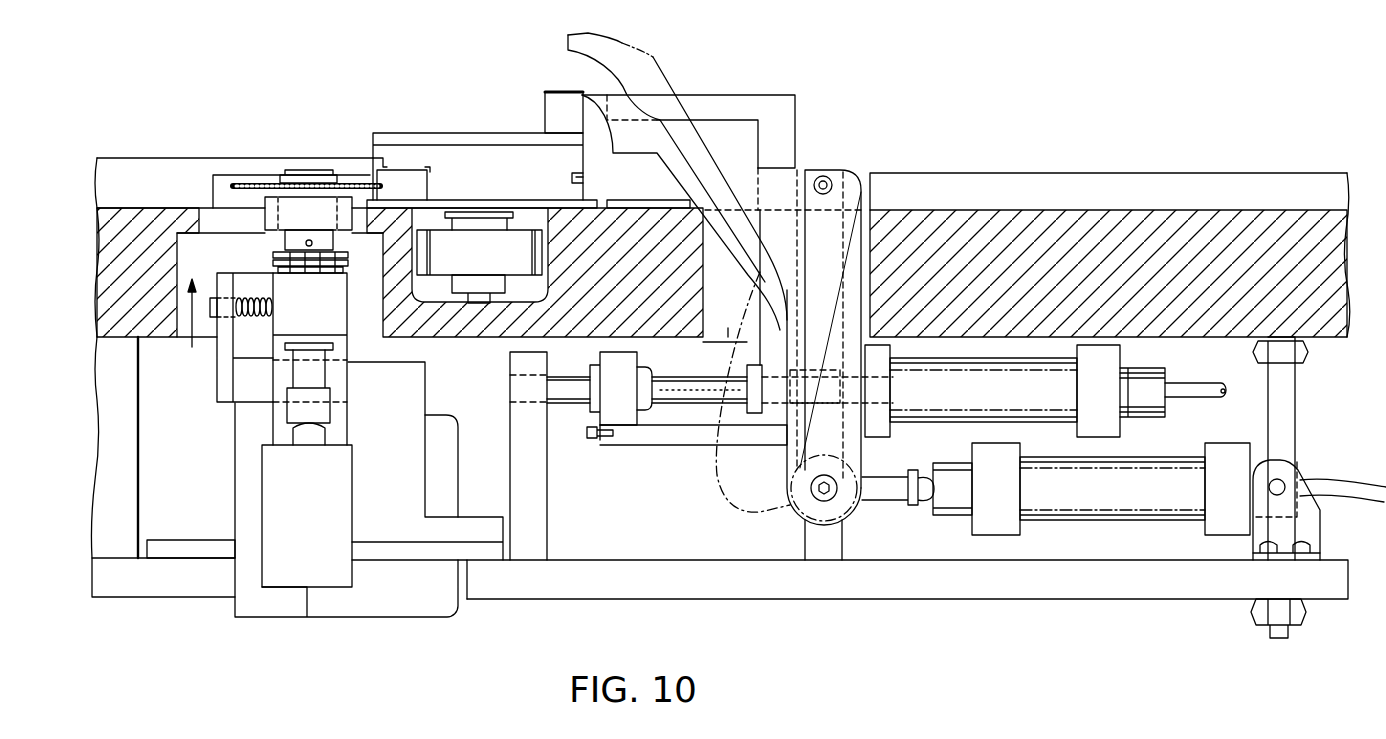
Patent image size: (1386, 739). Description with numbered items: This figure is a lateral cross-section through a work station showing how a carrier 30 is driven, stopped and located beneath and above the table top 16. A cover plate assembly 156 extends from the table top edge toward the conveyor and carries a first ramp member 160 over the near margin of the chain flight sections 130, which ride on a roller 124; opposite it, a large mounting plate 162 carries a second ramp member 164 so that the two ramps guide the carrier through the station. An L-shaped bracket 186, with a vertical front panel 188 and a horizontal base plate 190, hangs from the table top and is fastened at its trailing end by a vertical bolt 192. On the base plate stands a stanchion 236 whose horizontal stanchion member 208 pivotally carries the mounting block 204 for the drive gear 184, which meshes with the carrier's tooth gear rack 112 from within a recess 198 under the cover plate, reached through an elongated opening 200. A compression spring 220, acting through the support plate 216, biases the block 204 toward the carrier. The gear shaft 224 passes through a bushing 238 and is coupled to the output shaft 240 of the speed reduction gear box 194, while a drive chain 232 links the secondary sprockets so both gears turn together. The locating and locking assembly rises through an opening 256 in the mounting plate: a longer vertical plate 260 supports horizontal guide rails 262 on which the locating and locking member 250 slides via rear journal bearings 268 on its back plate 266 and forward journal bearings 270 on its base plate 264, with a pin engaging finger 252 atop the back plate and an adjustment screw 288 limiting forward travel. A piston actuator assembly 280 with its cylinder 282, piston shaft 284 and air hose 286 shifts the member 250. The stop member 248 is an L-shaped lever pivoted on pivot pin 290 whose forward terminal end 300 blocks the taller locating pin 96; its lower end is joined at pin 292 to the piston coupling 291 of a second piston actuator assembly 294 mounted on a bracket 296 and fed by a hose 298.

The table top 16 is at (97, 263).
The carrier 30 is at (372, 128).
The leading end locating pin 96 is at (545, 90).
The tooth gear rack 112 is at (424, 168).
The wheel or roller 124 is at (482, 245).
The chain flight sections 130 is at (547, 205).
The cover plate assembly 156 is at (139, 168).
The first ramp member 160 is at (375, 160).
The mounting plate 162 is at (1241, 192).
The second ramp member 164 is at (574, 178).
The drive gear 184 is at (270, 183).
The L-shaped bracket 186 is at (93, 604).
The vertical front panel 188 is at (91, 473).
The horizontal base plate 190 is at (775, 585).
The vertical bolt 192 is at (1292, 413).
The speed reduction gear box 194 is at (325, 580).
The recess 198 is at (222, 180).
The elongated opening 200 is at (188, 325).
The mounting block 204 is at (340, 310).
The horizontal stanchion member 208 is at (385, 377).
The support plate 216 is at (226, 287).
The compression spring 220 is at (258, 331).
The shaft 224 is at (300, 373).
The drive chain 232 is at (305, 262).
The stanchion 236 is at (412, 485).
The bushing 238 is at (347, 345).
The output shaft 240 is at (318, 438).
The stop member 248 is at (772, 177).
The locating and locking member 250 is at (800, 88).
The pin engaging finger 252 is at (722, 96).
The elongated rectangular opening 256 is at (729, 329).
The vertical plate 260 is at (840, 541).
The horizontal guide rail 262 is at (571, 383).
The horizontal base plate 264 is at (692, 445).
The vertically upstanding back plate 266 is at (783, 123).
The rear journal bearing 268 is at (750, 413).
The forward journal bearing 270 is at (625, 360).
The piston actuator assembly 280 is at (1171, 372).
The cylinder 282 is at (1025, 412).
The piston shaft 284 is at (828, 378).
The air hose 286 is at (1190, 394).
The adjustment screw 288 is at (590, 432).
The pivot pin 290 is at (831, 182).
The piston coupling 291 is at (872, 481).
The pin 292 is at (818, 494).
The second piston actuator assembly 294 is at (1094, 519).
The bracket 296 is at (1312, 530).
The hose 298 is at (1340, 486).
The forward terminal end 300 is at (585, 33).